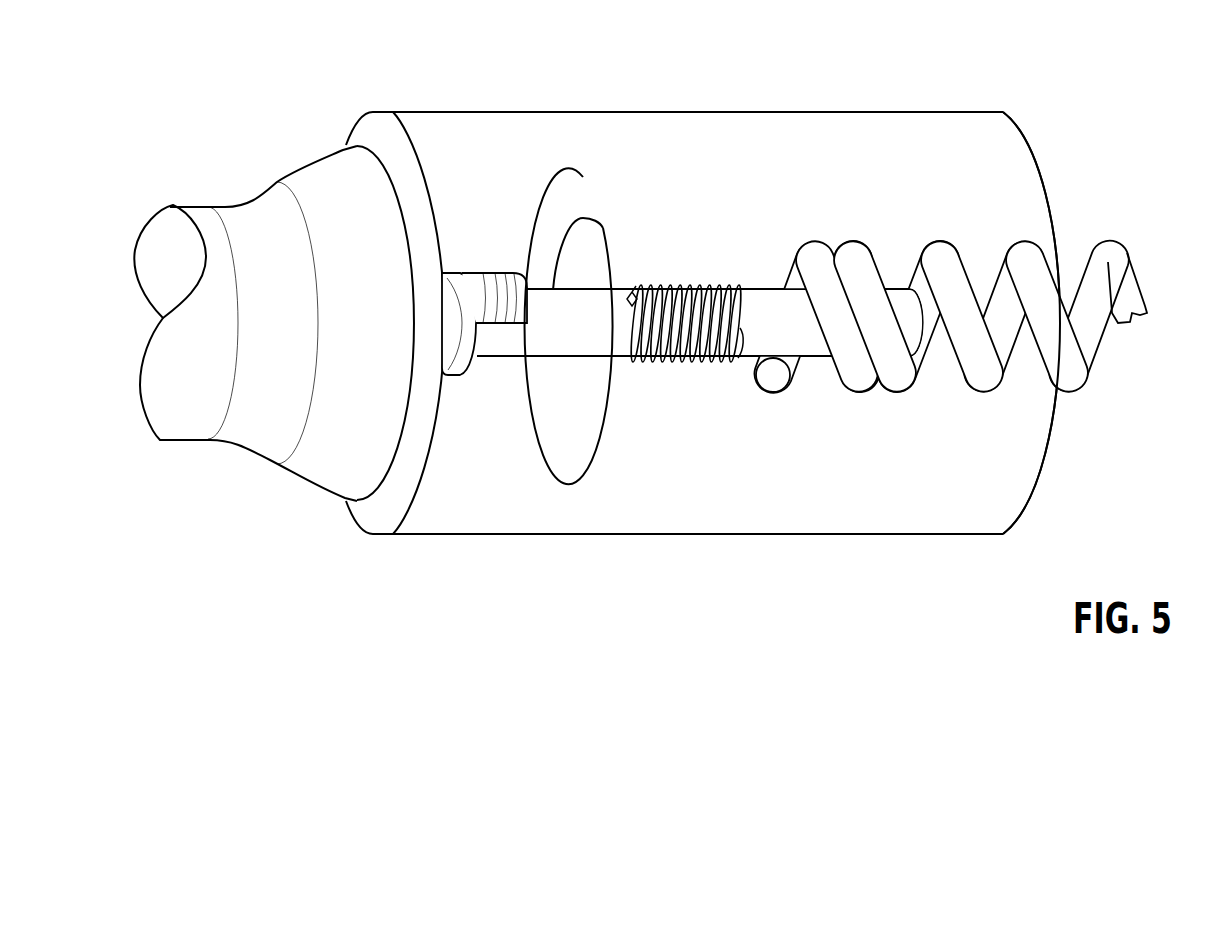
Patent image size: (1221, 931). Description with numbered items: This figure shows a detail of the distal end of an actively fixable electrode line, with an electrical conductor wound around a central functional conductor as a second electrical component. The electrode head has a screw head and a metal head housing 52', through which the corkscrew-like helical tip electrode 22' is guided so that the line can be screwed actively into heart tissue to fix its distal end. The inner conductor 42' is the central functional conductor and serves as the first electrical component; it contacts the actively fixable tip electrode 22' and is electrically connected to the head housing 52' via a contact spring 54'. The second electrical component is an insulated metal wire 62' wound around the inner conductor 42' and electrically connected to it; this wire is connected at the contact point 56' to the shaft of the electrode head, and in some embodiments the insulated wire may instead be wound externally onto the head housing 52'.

The head housing 52' is at (703, 284).
The contact spring 54' is at (569, 270).
The inner conductor 42' is at (682, 290).
The contact point 56' is at (627, 256).
The insulated metal wire 62' is at (686, 284).
The tip electrode 22' is at (950, 287).